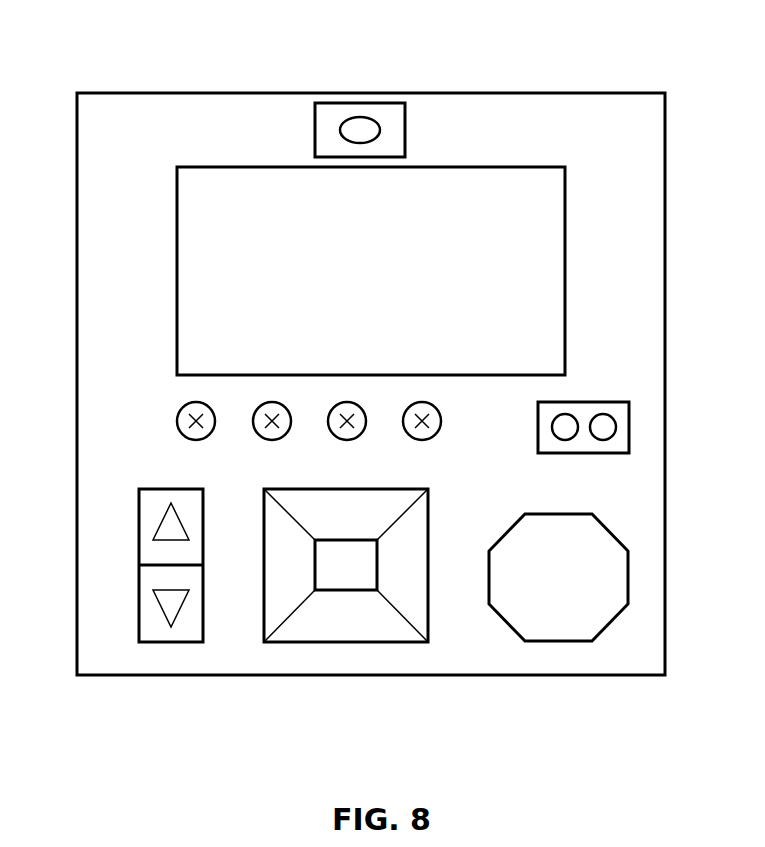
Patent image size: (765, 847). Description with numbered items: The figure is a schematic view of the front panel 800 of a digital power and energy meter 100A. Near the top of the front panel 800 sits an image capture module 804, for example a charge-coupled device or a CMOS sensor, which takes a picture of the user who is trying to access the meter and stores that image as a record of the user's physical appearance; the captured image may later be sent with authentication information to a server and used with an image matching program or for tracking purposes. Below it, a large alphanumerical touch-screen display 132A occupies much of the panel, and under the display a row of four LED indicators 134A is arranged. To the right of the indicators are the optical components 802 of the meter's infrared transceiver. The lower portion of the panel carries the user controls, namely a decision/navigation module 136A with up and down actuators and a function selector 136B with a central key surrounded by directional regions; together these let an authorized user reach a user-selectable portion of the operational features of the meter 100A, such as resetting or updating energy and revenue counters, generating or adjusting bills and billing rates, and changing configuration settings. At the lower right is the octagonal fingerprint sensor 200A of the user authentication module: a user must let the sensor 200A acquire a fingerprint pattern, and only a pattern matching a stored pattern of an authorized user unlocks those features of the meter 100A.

The meter 100A is at (141, 62).
The front panel 800 is at (616, 103).
The image capture module 804 is at (353, 103).
The alphanumerical touch-screen display 132A is at (175, 175).
The LED indicators 134A is at (421, 402).
The optical components 802 is at (578, 403).
The decision/navigation module 136A is at (178, 488).
The function selector 136B is at (277, 488).
The fingerprint sensor 200A is at (553, 513).